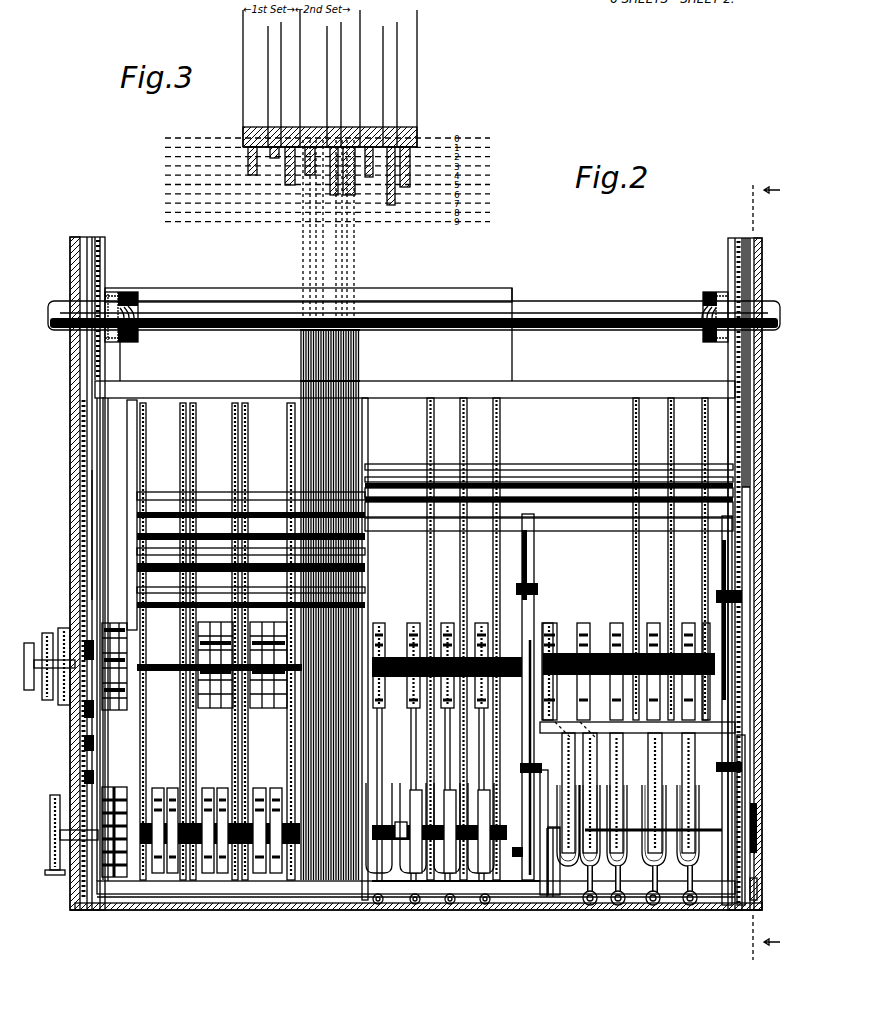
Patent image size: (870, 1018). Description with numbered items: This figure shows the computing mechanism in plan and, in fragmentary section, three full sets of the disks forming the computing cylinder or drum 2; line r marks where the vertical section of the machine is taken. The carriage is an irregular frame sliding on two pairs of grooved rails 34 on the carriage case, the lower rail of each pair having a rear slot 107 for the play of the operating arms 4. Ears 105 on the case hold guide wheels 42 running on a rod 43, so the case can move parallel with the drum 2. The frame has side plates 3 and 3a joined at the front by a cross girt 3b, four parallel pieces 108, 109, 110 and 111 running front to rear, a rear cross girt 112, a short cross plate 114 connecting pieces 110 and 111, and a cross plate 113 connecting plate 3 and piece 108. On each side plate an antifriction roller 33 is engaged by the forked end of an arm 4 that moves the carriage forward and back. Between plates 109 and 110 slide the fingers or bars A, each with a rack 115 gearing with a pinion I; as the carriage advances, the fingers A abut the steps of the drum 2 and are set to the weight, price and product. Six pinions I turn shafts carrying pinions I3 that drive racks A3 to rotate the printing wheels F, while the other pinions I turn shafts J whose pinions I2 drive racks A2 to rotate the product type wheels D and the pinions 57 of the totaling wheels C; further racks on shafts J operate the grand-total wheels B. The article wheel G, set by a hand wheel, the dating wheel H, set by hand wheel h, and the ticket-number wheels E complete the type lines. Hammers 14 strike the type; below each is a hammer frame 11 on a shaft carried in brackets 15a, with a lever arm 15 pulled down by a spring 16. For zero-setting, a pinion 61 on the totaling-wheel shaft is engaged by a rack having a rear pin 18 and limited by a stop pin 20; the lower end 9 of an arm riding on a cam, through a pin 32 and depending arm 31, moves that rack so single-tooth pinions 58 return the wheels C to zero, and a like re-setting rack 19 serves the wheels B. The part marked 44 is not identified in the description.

In FIG. 3, the computing cylinder or drum 2 is at (418, 86).
In FIG. 2, the section line r is at (762, 575).
In FIG. 2, the carriage side plate 3 is at (740, 438).
In FIG. 2, the carriage side plate 3a is at (95, 515).
In FIG. 2, the cross girt 3b is at (544, 382).
In FIG. 2, the grooved rails 34 is at (88, 365).
In FIG. 2, the guide wheels 42 is at (135, 310).
In FIG. 2, the rod 43 is at (422, 303).
In FIG. 2, the plate 44 is at (245, 289).
In FIG. 2, the ears 105 is at (120, 294).
In FIG. 2, the slot 107 is at (90, 578).
In FIG. 2, the parallel frame piece 108 is at (538, 585).
In FIG. 2, the carriage frame plate 109 is at (368, 600).
In FIG. 2, the carriage frame plate 110 is at (295, 478).
In FIG. 2, the carriage frame plate 111 is at (128, 508).
In FIG. 2, the rear cross girt 112 is at (305, 882).
In FIG. 2, the cross plate 113 is at (652, 723).
In FIG. 2, the short cross plate 114 is at (212, 493).
In FIG. 2, the rack 115 is at (338, 460).
In FIG. 2, the fingers or bars A is at (325, 882).
In FIG. 2, the rack A2 is at (434, 438).
In FIG. 2, the rack A3 is at (180, 437).
In FIG. 2, the registering wheels B is at (688, 623).
In FIG. 2, the totaling wheel C is at (480, 623).
In FIG. 2, the type wheels D is at (400, 800).
In FIG. 2, the ticket number wheels E is at (216, 708).
In FIG. 2, the printing wheels F is at (172, 788).
In FIG. 2, the article wheel G is at (116, 787).
In FIG. 2, the dating stamp wheel H is at (102, 633).
In FIG. 2, the pinion I is at (366, 465).
In FIG. 2, the pinion I2 is at (502, 464).
In FIG. 2, the pinion I3 is at (178, 596).
In FIG. 2, the shafts J is at (140, 575).
In FIG. 2, the hand wheel h is at (24, 664).
In FIG. 2, the operating arm 4 is at (80, 725).
In FIG. 2, the arm lower end 9 is at (46, 828).
In FIG. 2, the hammer frame 11 is at (420, 809).
In FIG. 2, the hammer 14 is at (430, 748).
In FIG. 2, the lever arm 15 is at (412, 878).
In FIG. 2, the brackets 15a is at (718, 885).
In FIG. 2, the spring 16 is at (592, 905).
In FIG. 2, the pin 18 is at (745, 840).
In FIG. 2, the re-setting rack 19 is at (736, 585).
In FIG. 2, the stop pin 20 is at (728, 764).
In FIG. 2, the depending arm 31 is at (755, 822).
In FIG. 2, the pin 32 is at (755, 862).
In FIG. 2, the antifriction roller 33 is at (84, 748).
In FIG. 2, the pinions 57 is at (415, 678).
In FIG. 2, the single tooth pinions 58 is at (412, 690).
In FIG. 2, the pinion 61 is at (500, 678).